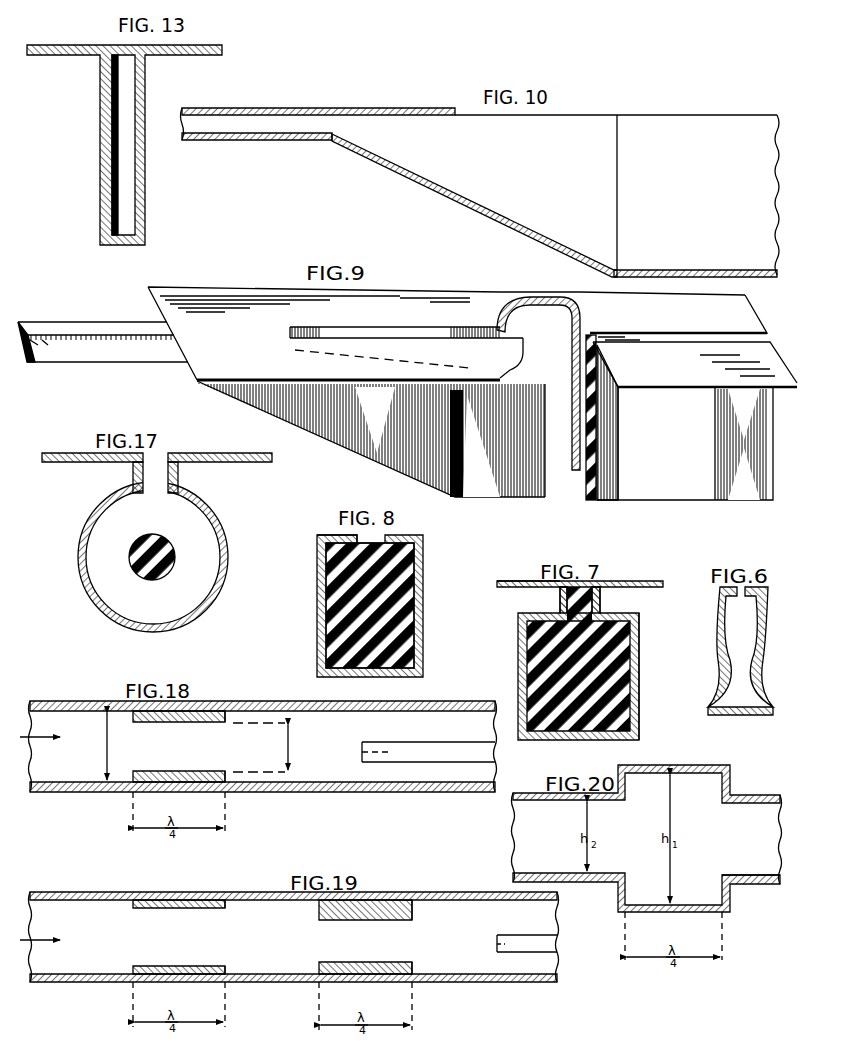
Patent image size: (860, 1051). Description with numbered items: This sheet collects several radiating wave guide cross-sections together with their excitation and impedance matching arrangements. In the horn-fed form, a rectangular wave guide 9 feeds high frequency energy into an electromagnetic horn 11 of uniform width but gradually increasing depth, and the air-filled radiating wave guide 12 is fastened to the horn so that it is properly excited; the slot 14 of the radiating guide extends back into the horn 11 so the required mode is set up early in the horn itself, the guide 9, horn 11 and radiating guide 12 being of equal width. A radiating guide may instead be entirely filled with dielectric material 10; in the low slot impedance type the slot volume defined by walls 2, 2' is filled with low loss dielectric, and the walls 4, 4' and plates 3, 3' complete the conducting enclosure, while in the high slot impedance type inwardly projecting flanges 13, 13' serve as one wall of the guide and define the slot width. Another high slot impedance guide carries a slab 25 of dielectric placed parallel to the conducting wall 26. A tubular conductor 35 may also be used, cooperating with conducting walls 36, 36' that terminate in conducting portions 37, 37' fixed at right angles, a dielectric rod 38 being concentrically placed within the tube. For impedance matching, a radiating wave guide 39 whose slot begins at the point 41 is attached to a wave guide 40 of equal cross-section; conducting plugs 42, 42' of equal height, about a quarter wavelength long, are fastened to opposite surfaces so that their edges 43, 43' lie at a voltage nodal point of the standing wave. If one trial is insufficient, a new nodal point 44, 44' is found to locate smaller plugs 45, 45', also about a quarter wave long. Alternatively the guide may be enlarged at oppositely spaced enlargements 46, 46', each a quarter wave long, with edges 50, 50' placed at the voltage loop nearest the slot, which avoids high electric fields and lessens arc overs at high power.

In FIG. 7, the wall 2 is at (604, 600).
In FIG. 7, the wall 2' is at (549, 600).
In FIG. 7, the top plate 3 is at (580, 575).
In FIG. 7, the top plate 3' is at (525, 572).
In FIG. 7, the side wall 4 is at (567, 663).
In FIG. 7, the side wall 4' is at (649, 676).
In FIG. 10, the rectangular wave guide 9 is at (244, 109).
In FIG. 9, the rectangular wave guide 9 is at (109, 331).
In FIG. 9, the dielectric material 10 is at (583, 528).
In FIG. 8, the dielectric material 10 is at (335, 594).
In FIG. 7, the dielectric material 10 is at (627, 677).
In FIG. 10, the electromagnetic horn 11 is at (432, 140).
In FIG. 9, the electromagnetic horn 11 is at (358, 440).
In FIG. 10, the radiating wave guide 12 is at (673, 138).
In FIG. 9, the radiating wave guide 12 is at (668, 500).
In FIG. 8, the inwardly projecting flange 13 is at (379, 598).
In FIG. 8, the inwardly projecting flange 13' is at (325, 531).
In FIG. 9, the slot 14 is at (349, 332).
In FIG. 13, the dielectric slab 25 is at (110, 89).
In FIG. 13, the conducting wall 26 is at (104, 178).
In FIG. 17, the tubular conductor 35 is at (88, 512).
In FIG. 17, the conducting wall 36 is at (123, 477).
In FIG. 17, the conducting wall 36' is at (189, 477).
In FIG. 17, the conducting portion 37 is at (92, 447).
In FIG. 17, the conducting portion 37' is at (220, 447).
In FIG. 17, the dielectric rod 38 is at (154, 540).
In FIG. 18, the radiating wave guide 39 is at (455, 740).
In FIG. 19, the radiating wave guide 39 is at (294, 937).
In FIG. 18, the wave guide 40 is at (342, 750).
In FIG. 19, the wave guide 40 is at (477, 955).
In FIG. 18, the slot beginning point 41 is at (428, 752).
In FIG. 19, the slot beginning point 41 is at (527, 944).
In FIG. 18, the conducting plug 42 is at (179, 727).
In FIG. 19, the conducting plug 42 is at (365, 919).
In FIG. 18, the conducting plug 42' is at (179, 771).
In FIG. 19, the conducting plug 42' is at (365, 961).
In FIG. 18, the plug edge 43 is at (236, 703).
In FIG. 19, the plug edge 43 is at (423, 915).
In FIG. 18, the plug edge 43' is at (241, 791).
In FIG. 19, the plug edge 43' is at (425, 963).
In FIG. 19, the nodal point 44 is at (237, 912).
In FIG. 19, the nodal point 44' is at (239, 962).
In FIG. 19, the smaller plug 45 is at (179, 914).
In FIG. 19, the smaller plug 45' is at (179, 962).
In FIG. 20, the enlargement 46 is at (646, 784).
In FIG. 20, the enlargement 46' is at (646, 892).
In FIG. 20, the edge 50 is at (647, 838).
In FIG. 20, the edge 50' is at (744, 866).